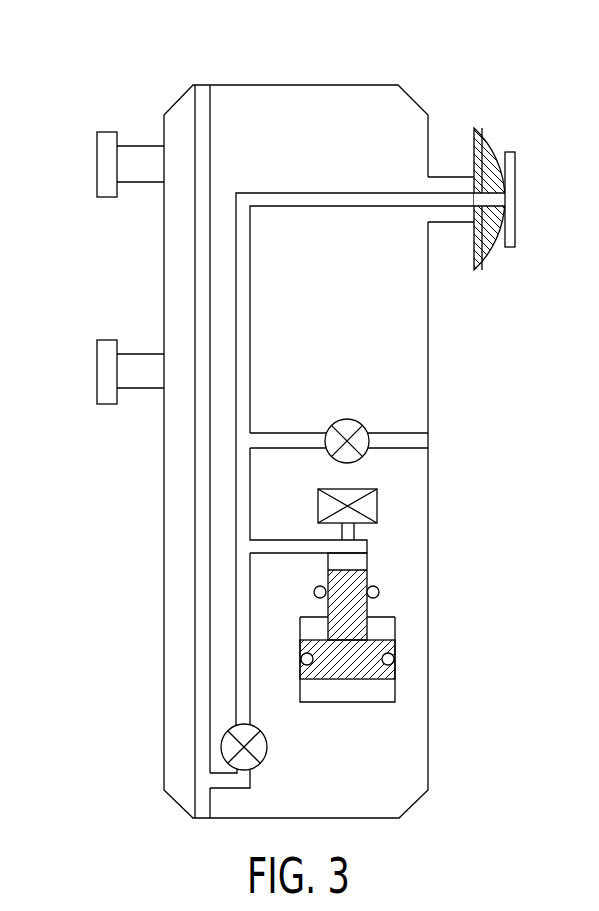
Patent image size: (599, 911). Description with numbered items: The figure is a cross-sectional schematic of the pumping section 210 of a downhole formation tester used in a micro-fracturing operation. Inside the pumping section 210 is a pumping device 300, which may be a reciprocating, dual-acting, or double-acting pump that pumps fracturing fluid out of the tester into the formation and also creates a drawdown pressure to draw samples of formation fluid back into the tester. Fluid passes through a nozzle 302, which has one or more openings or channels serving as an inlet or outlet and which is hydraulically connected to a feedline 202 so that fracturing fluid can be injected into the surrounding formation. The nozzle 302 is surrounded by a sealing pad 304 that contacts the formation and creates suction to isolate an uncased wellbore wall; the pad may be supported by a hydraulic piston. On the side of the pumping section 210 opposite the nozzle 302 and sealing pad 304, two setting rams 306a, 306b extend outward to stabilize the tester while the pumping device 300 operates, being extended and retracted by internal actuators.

The pumping section 210 is at (296, 85).
The feedline 202 is at (195, 595).
The pumping device 300 is at (407, 652).
The nozzle 302 is at (517, 212).
The sealing pad 304 is at (500, 138).
The setting ram 306a is at (97, 168).
The setting ram 306b is at (97, 374).